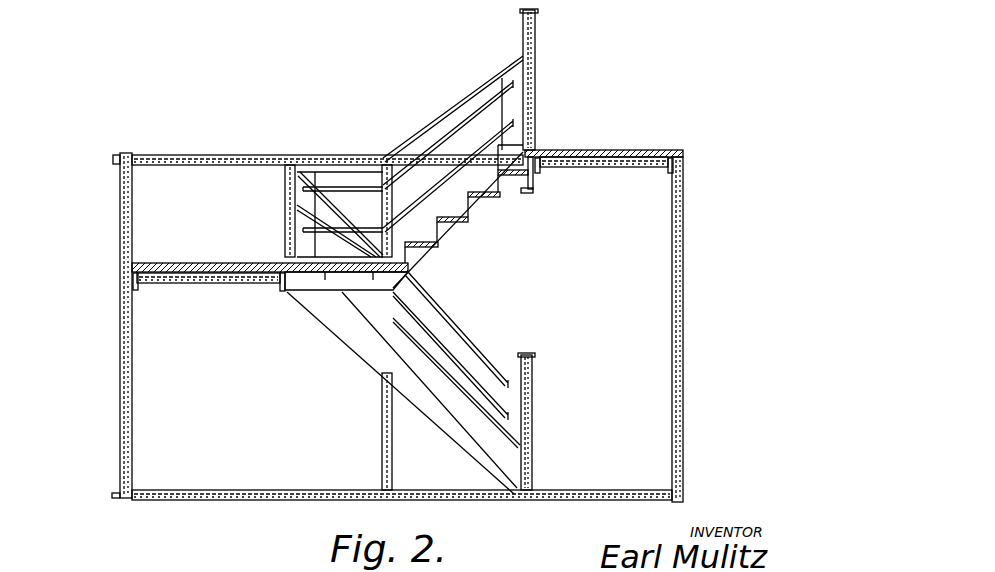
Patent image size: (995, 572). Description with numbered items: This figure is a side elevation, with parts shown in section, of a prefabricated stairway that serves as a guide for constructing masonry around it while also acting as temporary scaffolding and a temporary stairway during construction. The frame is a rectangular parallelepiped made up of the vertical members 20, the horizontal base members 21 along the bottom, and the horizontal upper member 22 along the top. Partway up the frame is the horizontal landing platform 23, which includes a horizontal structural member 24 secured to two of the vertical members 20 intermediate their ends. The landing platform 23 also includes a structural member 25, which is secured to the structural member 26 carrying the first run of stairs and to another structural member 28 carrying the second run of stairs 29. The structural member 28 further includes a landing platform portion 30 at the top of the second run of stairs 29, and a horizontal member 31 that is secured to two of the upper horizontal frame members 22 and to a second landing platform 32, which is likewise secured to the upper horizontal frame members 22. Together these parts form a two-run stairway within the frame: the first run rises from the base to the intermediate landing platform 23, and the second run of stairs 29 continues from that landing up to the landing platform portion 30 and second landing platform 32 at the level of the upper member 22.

The vertical members 20 is at (134, 403).
The horizontal base members 21 is at (115, 500).
The horizontal upper member 22 is at (176, 152).
The horizontal landing platform 23 is at (213, 280).
The horizontal structural member 24 is at (138, 290).
The structural member 25 is at (277, 293).
The structural member 26 is at (358, 348).
The structural member 28 is at (455, 235).
The second run of stairs 29 is at (472, 207).
The landing platform portion 30 is at (620, 163).
The horizontal member 31 is at (540, 167).
The second landing platform 32 is at (648, 157).